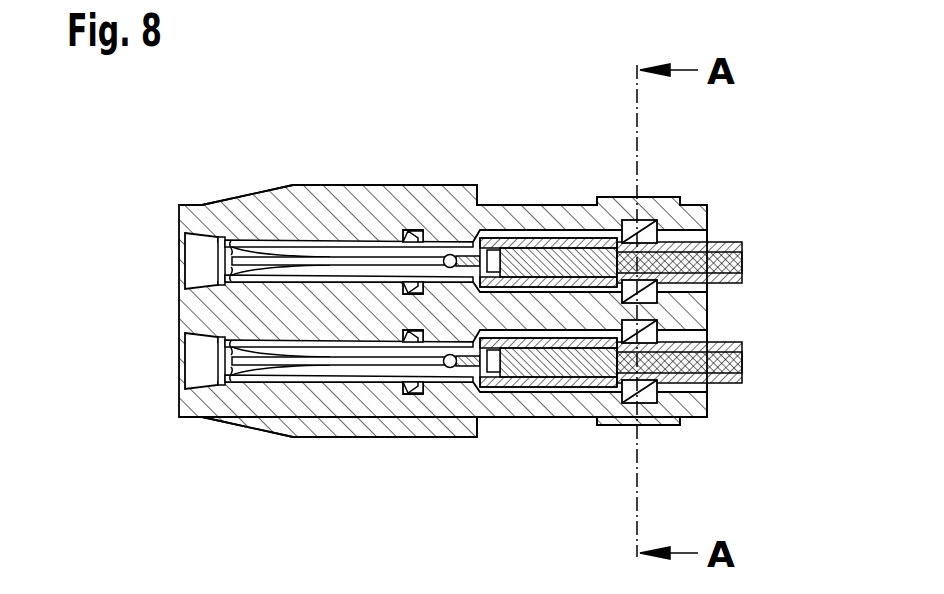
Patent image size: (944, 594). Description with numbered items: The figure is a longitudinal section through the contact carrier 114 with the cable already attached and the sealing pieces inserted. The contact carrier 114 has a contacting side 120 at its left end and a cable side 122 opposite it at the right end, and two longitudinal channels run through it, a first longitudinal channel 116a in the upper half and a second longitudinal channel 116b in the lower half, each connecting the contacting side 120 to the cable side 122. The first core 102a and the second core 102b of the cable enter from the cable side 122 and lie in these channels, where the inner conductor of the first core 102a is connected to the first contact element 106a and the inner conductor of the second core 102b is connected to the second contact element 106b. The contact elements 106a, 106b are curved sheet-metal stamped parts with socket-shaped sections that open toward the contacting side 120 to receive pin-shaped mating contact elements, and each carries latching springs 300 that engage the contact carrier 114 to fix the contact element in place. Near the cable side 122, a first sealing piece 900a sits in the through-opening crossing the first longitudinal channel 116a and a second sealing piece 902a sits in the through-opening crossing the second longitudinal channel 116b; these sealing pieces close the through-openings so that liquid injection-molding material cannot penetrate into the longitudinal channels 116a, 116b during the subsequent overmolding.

The contacting side 120 is at (162, 222).
The contact carrier 114 is at (268, 237).
The cable side 122 is at (725, 211).
The first contact element 106a is at (250, 240).
The second contact element 106b is at (258, 380).
The latching spring 300 is at (397, 280).
The first longitudinal channel 116a is at (562, 228).
The second longitudinal channel 116b is at (562, 395).
The first core 102a is at (742, 262).
The second core 102b is at (742, 362).
The first sealing piece 900a is at (641, 220).
The second sealing piece 902a is at (650, 401).